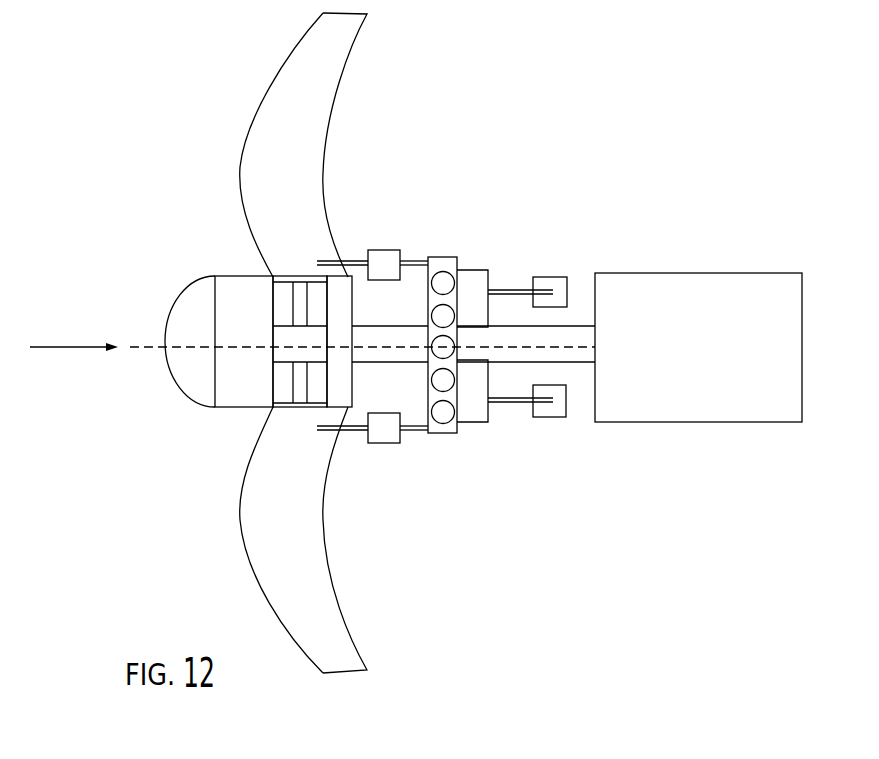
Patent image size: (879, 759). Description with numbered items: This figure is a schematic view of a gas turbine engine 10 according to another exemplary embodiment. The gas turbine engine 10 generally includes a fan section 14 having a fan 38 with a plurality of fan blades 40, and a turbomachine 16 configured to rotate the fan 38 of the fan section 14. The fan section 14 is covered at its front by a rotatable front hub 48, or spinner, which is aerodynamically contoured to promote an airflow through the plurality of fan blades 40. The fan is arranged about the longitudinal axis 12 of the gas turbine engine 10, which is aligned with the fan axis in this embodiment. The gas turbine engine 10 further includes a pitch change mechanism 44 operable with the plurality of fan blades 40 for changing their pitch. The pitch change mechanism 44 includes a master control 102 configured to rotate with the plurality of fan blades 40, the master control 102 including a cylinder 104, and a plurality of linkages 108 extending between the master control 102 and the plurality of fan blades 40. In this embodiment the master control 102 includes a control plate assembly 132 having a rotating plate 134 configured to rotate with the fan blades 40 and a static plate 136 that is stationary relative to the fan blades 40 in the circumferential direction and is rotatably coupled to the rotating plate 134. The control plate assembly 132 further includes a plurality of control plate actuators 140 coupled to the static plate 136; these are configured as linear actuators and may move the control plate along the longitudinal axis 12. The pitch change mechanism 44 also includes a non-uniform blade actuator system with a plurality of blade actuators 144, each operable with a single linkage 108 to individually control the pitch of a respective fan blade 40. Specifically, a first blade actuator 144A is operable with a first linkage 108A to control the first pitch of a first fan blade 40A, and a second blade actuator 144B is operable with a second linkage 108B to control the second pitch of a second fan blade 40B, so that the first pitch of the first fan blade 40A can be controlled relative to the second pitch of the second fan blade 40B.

The gas turbine engine 10 is at (88, 95).
The longitudinal axis 12 is at (158, 347).
The fan section 14 is at (213, 144).
The fan 38 is at (272, 234).
The turbomachine 16 is at (709, 358).
The fan blades 40 is at (330, 63).
The first fan blade 40A is at (339, 145).
The second fan blade 40B is at (353, 540).
The pitch change mechanism 44 is at (501, 151).
The front hub 48 is at (190, 287).
The master control 102 is at (479, 250).
The cylinder 104 is at (376, 155).
The linkages 108 is at (348, 260).
The first linkage 108A is at (372, 218).
The second linkage 108B is at (307, 462).
The control plate assembly 132 is at (500, 357).
The rotating plate 134 is at (448, 433).
The static plate 136 is at (478, 422).
The control plate actuators 140 is at (520, 290).
The blade actuators 144 is at (387, 260).
The first blade actuator 144A is at (445, 223).
The second blade actuator 144B is at (395, 481).